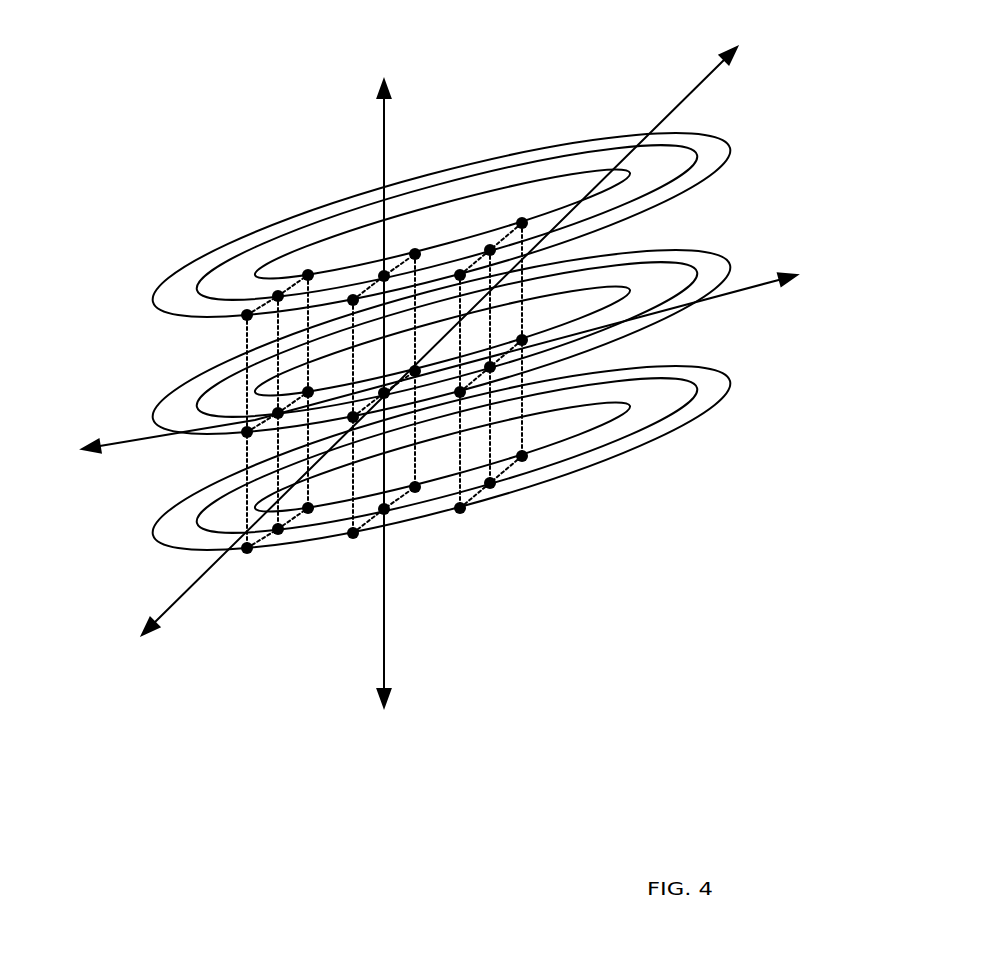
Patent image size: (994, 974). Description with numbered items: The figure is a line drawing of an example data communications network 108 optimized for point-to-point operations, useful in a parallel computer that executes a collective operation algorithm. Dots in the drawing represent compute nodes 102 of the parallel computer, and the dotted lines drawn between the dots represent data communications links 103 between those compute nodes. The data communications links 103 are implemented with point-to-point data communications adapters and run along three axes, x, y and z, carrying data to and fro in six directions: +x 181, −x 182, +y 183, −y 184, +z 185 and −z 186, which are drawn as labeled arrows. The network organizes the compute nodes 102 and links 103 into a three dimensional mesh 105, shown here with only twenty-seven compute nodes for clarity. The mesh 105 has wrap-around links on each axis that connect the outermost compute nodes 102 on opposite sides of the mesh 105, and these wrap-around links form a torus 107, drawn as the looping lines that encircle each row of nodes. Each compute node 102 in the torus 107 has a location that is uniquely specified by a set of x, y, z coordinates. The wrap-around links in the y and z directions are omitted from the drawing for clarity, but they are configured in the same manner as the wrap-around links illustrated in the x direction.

The compute nodes 102 is at (522, 460).
The data communications links 103 is at (248, 459).
The three dimensional mesh 105 is at (523, 222).
The torus 107 is at (224, 220).
The data communications network 108 is at (347, 916).
The +x direction 181 is at (832, 305).
The −x direction 182 is at (79, 485).
The +y direction 183 is at (777, 70).
The −y direction 184 is at (138, 681).
The +z direction 185 is at (400, 71).
The −z direction 186 is at (402, 763).